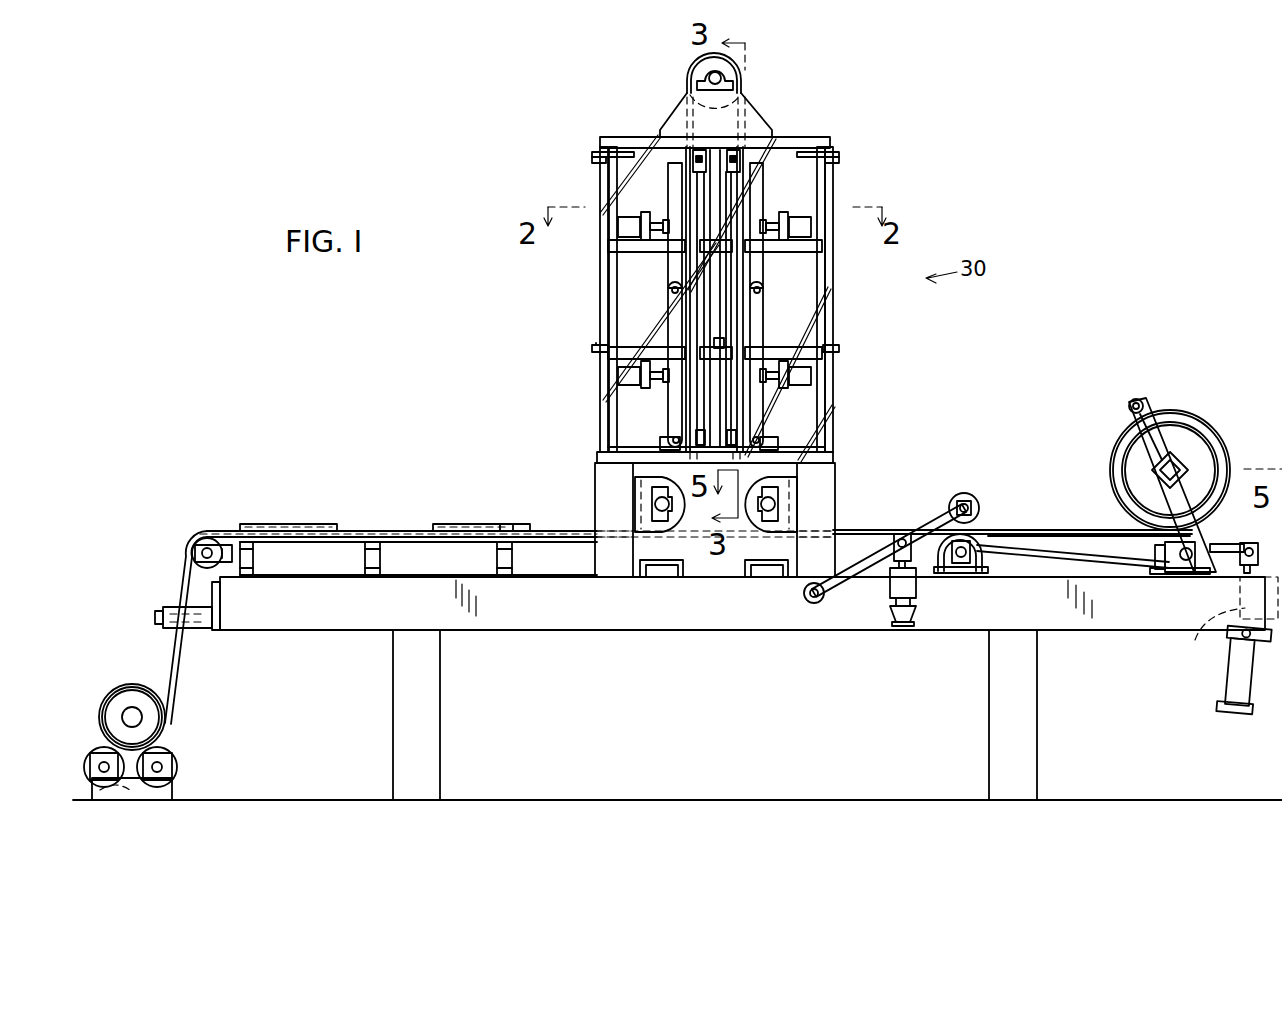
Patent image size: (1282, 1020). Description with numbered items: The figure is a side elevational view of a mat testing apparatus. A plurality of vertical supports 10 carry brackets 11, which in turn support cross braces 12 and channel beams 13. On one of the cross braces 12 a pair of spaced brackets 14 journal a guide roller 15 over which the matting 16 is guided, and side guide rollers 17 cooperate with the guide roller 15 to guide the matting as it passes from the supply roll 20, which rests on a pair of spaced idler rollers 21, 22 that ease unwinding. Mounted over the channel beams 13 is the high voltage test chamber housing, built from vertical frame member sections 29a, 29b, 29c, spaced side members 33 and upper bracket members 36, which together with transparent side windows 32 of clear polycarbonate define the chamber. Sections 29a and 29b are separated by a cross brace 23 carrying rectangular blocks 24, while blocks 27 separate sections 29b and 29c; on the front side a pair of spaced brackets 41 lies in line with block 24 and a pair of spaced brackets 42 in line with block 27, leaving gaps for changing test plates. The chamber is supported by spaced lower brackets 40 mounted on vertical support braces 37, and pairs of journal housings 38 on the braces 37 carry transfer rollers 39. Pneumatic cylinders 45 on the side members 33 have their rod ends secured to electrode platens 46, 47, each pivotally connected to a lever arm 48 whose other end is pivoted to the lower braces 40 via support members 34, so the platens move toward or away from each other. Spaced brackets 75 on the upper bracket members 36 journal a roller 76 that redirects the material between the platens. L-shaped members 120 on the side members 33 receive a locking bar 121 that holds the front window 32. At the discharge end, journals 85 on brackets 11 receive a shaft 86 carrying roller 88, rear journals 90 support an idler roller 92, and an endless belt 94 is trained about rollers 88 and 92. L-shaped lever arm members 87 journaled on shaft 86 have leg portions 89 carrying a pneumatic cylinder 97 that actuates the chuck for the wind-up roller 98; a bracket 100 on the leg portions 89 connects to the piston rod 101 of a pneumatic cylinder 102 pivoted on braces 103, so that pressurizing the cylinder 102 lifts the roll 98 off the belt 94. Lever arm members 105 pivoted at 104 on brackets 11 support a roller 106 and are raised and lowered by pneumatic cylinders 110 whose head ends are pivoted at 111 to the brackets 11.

The vertical supports 10 is at (440, 725).
The brackets 11 is at (338, 598).
The cross braces 12 is at (255, 556).
The channel beams 13 is at (660, 578).
The spaced brackets 14 is at (195, 548).
The guide roller 15 is at (210, 538).
The matting 16 is at (385, 530).
The side guide rollers 17 is at (190, 628).
The supply roll 20 is at (118, 690).
The idler roller 21 is at (92, 752).
The idler roller 22 is at (170, 760).
The cross brace 23 is at (700, 262).
The rectangular shaped blocks 24 is at (690, 244).
The rectangular shaped blocks 27 is at (735, 345).
The vertical frame member section 29a is at (724, 158).
The vertical frame member section 29b is at (725, 288).
The vertical frame member section 29c is at (730, 420).
The transparent side windows 32 is at (812, 200).
The side members 33 is at (605, 300).
The support members 34 is at (662, 442).
The upper bracket members 36 is at (805, 138).
The vertical support braces 37 is at (600, 490).
The journal housings 38 is at (650, 504).
The transfer rollers 39 is at (670, 520).
The brackets 40 is at (612, 452).
The spaced brackets 41 is at (636, 228).
The spaced brackets 42 is at (630, 370).
The pneumatic cylinders 45 is at (625, 215).
The electrode platen 46 is at (670, 180).
The electrode platen 47 is at (764, 178).
The lever arm 48 is at (668, 320).
The spaced brackets 75 is at (750, 120).
The roller 76 is at (705, 62).
The journals 85 is at (975, 540).
The shaft 86 is at (960, 573).
The L-shaped lever arm members 87 is at (1070, 556).
The roller 88 is at (968, 548).
The leg portions 89 is at (1210, 500).
The journals 90 is at (1180, 575).
The idler roller 92 is at (1160, 566).
The endless belt 94 is at (1062, 530).
The pneumatic cylinder 97 is at (1145, 452).
The wind-up roller 98 is at (1188, 424).
The bracket 100 is at (1232, 560).
The piston rod 101 is at (1205, 625).
The pneumatic cylinder 102 is at (1228, 690).
The braces 103 is at (1262, 625).
The pivot 104 is at (814, 603).
The lever arm members 105 is at (877, 560).
The roller 106 is at (960, 493).
The pneumatic cylinders 110 is at (890, 590).
The pivot 111 is at (905, 627).
The L-shaped members 120 is at (592, 158).
The locking bar 121 is at (614, 150).